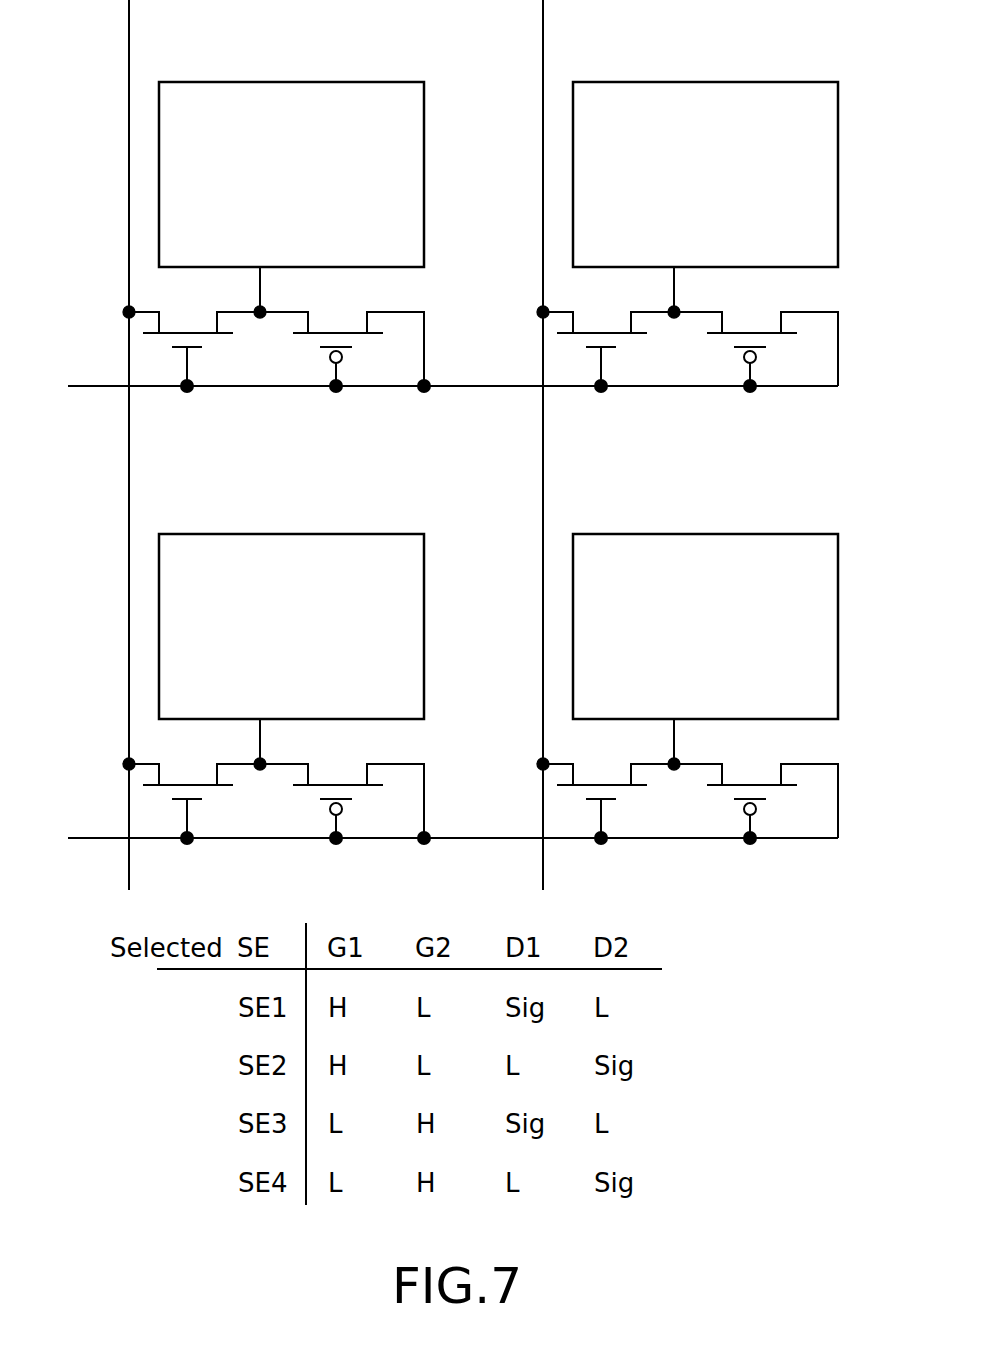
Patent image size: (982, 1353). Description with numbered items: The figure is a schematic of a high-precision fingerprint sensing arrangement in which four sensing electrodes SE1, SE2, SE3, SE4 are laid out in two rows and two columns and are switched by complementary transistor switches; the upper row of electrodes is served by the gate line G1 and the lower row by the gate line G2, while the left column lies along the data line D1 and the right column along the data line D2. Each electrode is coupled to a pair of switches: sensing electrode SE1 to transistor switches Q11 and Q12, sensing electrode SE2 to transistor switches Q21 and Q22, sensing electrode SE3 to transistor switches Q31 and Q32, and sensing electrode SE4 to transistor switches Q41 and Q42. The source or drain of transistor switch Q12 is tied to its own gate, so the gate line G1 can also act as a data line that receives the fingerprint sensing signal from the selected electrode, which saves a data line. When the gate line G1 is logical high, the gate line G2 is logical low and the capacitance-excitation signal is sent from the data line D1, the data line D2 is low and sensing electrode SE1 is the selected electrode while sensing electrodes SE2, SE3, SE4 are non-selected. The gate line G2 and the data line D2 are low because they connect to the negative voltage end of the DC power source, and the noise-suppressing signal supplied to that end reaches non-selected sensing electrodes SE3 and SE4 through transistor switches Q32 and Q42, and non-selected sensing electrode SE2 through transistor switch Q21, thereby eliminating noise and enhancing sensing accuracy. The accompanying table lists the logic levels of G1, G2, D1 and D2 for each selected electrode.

The sensing electrode SE1 is at (291, 197).
The sensing electrode SE2 is at (705, 197).
The sensing electrode SE3 is at (291, 649).
The sensing electrode SE4 is at (705, 649).
The transistor Q11 is at (194, 337).
The transistor switch Q12 is at (345, 337).
The transistor switch Q21 is at (608, 337).
The transistor Q22 is at (756, 337).
The transistor Q31 is at (194, 789).
The transistor switch Q32 is at (345, 789).
The transistor Q41 is at (608, 789).
The transistor switch Q42 is at (756, 789).
The gate line G1 is at (435, 385).
The gate line G2 is at (435, 837).
The data line D1 is at (151, 449).
The data line D2 is at (565, 449).